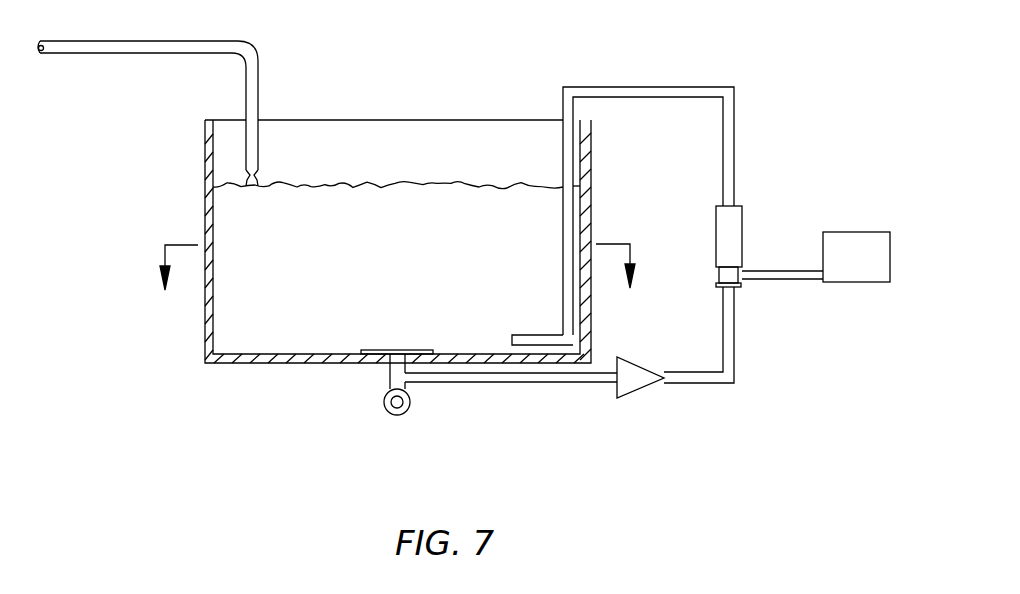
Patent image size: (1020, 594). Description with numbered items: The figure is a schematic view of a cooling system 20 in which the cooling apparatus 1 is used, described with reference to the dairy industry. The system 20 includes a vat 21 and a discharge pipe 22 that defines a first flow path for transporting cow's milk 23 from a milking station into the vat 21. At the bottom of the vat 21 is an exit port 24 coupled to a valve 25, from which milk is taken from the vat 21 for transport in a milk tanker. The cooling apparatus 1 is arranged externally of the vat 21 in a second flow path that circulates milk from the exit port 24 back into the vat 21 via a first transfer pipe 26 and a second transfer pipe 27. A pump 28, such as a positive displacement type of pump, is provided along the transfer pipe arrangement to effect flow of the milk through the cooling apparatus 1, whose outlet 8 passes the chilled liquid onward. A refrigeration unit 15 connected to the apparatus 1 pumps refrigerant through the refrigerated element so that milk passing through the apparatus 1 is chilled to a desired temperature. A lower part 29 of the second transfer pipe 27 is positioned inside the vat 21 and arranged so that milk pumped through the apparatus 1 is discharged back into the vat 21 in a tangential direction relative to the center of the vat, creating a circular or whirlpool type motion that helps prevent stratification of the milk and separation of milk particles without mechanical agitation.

The cooling apparatus 1 is at (770, 206).
The outlet 8 is at (396, 273).
The refrigeration unit 15 is at (845, 232).
The cooling system 20 is at (403, 50).
The vat 21 is at (380, 120).
The discharge pipe 22 is at (160, 41).
The cow's milk 23 is at (405, 271).
The exit port 24 is at (388, 362).
The valve 25 is at (393, 416).
The first transfer pipe 26 is at (735, 350).
The second transfer pipe 27 is at (650, 88).
The pump 28 is at (632, 383).
The lower part of the second transfer pipe 29 is at (528, 345).